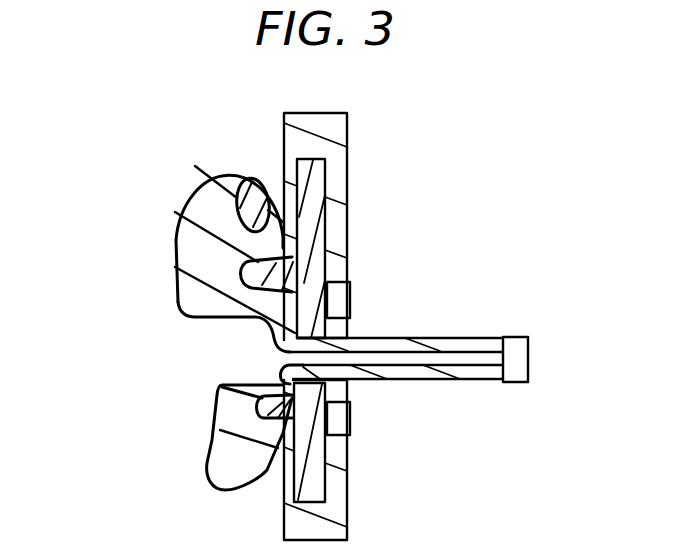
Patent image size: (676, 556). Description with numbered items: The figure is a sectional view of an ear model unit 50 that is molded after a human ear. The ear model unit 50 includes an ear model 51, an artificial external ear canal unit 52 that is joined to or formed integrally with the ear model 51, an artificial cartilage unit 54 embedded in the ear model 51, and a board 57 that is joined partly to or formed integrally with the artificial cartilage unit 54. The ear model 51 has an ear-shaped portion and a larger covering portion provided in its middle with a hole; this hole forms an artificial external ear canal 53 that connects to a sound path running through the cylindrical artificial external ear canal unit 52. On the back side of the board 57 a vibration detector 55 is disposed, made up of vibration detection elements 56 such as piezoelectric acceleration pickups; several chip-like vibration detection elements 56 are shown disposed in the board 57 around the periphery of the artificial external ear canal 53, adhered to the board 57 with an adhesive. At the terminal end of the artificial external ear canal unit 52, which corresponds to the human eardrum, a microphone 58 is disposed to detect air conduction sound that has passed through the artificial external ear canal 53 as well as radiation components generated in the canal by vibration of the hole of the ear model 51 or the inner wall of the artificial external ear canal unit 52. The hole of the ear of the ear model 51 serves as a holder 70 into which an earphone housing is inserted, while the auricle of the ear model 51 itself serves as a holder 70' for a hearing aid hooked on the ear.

The ear model unit 50 is at (138, 528).
The ear model 51 is at (210, 188).
The artificial external ear canal unit 52 is at (477, 377).
The artificial external ear canal 53 is at (445, 358).
The artificial cartilage unit 54 is at (252, 200).
The vibration detector 55 is at (350, 432).
The vibration detection element 56 is at (340, 295).
The board 57 is at (313, 180).
The microphone 58 is at (513, 357).
The holder 70 is at (195, 328).
The holder 70' is at (205, 121).